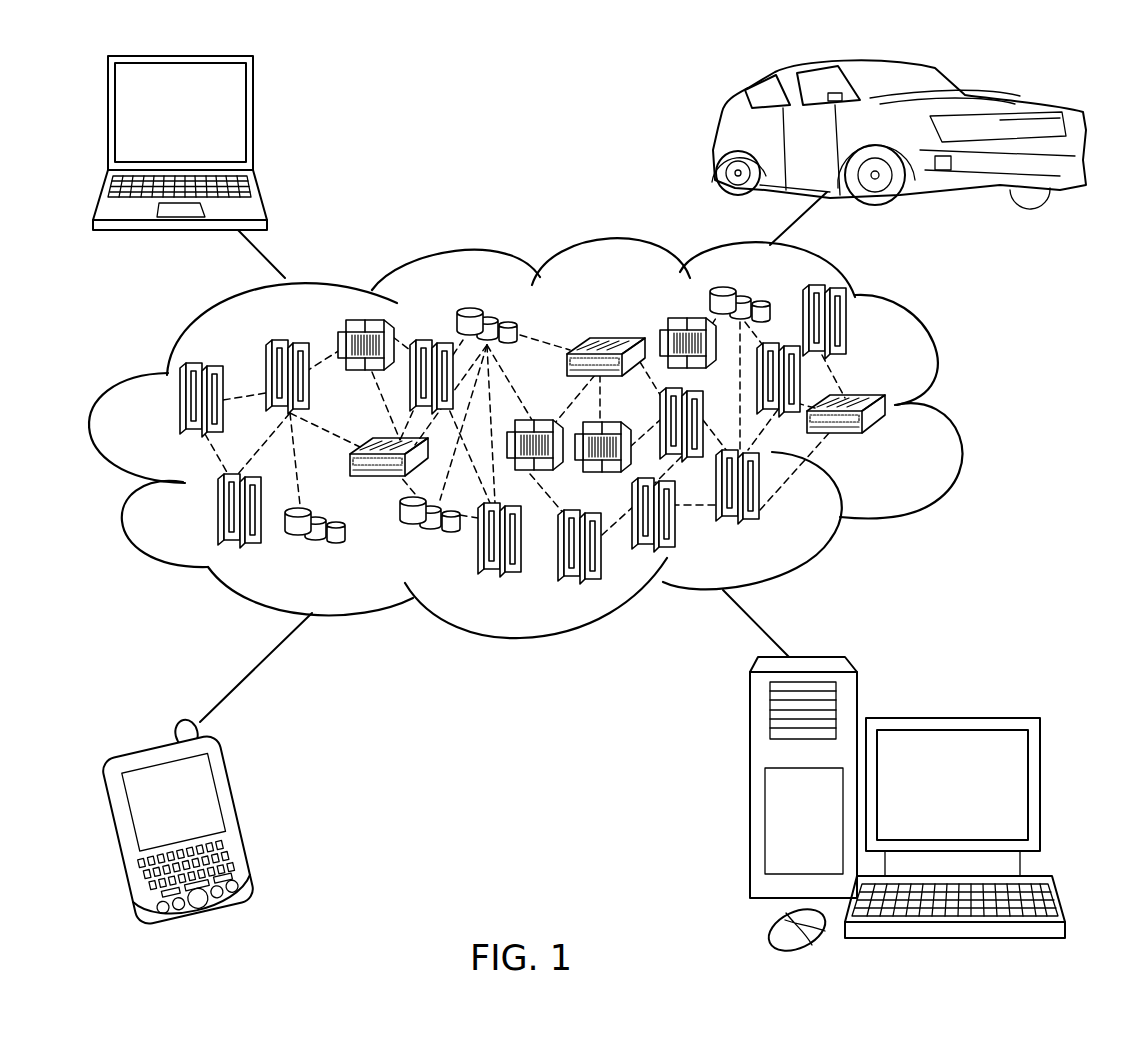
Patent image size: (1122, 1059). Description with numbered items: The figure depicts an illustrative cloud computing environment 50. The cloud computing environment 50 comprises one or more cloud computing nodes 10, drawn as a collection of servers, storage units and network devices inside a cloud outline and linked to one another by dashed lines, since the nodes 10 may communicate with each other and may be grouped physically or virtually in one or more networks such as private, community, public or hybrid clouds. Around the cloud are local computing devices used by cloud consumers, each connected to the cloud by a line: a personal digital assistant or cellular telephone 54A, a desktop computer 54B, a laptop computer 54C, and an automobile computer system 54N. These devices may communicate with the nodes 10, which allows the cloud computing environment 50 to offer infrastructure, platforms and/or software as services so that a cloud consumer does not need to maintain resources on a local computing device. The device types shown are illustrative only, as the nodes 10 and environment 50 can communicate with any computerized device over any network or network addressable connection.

The cloud computing nodes 10 is at (900, 447).
The cloud computing environment 50 is at (952, 412).
The personal digital assistant (PDA) or cellular telephone 54A is at (243, 818).
The desktop computer 54B is at (950, 718).
The laptop computer 54C is at (254, 123).
The automobile computer system 54N is at (719, 140).